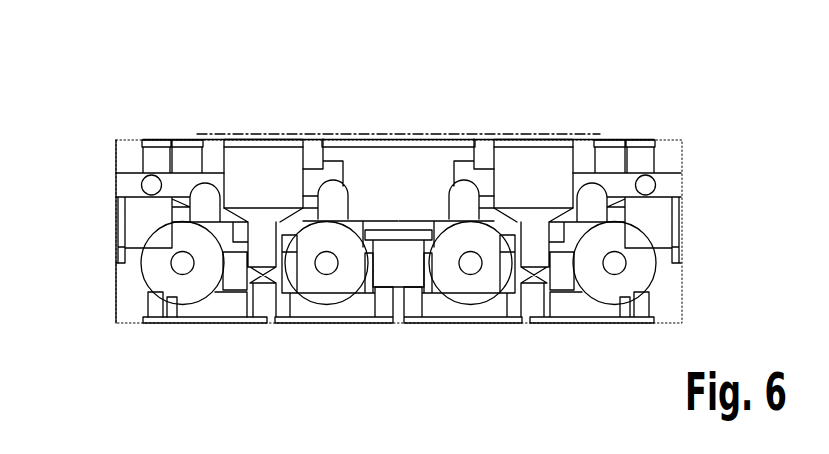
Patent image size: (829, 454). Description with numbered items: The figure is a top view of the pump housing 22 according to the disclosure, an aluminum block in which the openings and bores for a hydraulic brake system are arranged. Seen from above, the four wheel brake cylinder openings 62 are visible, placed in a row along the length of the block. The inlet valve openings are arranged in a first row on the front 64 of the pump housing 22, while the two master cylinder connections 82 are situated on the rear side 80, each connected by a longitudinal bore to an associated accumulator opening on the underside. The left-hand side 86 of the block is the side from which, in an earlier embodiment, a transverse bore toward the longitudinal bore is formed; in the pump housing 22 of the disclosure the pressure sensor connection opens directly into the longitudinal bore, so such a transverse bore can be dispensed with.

The pump housing 22 is at (369, 215).
The wheel brake cylinder openings 62 is at (186, 288).
The front 64 is at (125, 331).
The rear side 80 is at (668, 133).
The master cylinder connections 82 is at (263, 150).
The left-hand side 86 is at (110, 312).